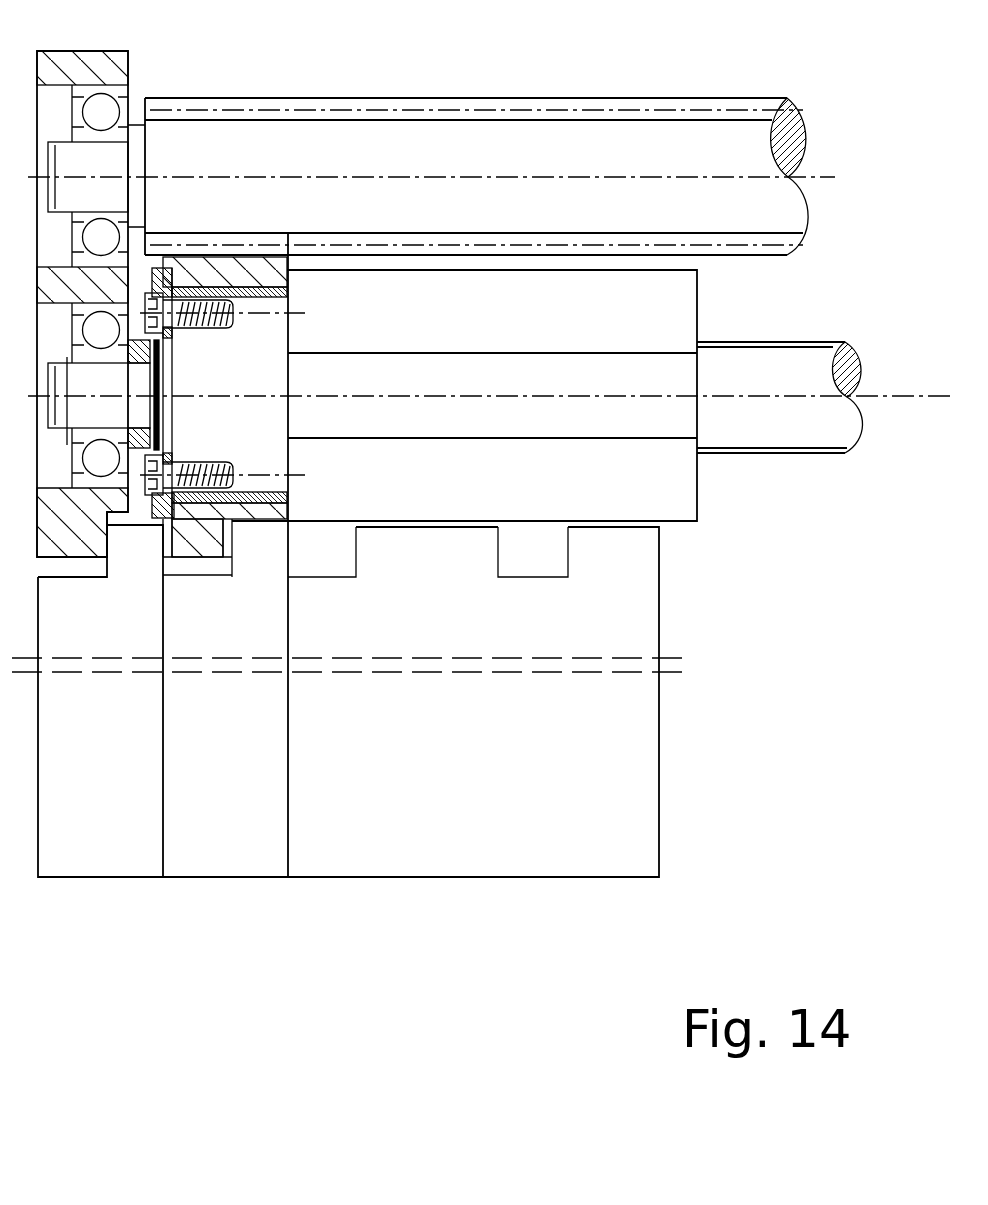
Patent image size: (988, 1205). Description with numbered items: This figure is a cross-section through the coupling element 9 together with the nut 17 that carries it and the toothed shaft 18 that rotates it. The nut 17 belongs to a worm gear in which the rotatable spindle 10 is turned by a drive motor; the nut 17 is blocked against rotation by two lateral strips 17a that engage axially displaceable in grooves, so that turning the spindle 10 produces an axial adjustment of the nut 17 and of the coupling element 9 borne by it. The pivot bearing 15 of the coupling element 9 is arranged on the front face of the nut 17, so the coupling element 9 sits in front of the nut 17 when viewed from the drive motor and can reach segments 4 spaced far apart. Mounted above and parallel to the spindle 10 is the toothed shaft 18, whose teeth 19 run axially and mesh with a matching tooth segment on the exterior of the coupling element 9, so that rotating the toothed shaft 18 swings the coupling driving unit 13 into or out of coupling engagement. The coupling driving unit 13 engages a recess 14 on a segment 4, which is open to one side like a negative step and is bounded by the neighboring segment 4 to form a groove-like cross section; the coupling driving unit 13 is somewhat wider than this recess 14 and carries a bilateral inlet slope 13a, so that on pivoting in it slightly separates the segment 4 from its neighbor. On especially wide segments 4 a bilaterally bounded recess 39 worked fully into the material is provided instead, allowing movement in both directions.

The segment 4 is at (98, 855).
The coupling element 9 is at (257, 268).
The spindle 10 is at (773, 433).
The coupling driving unit 13 is at (197, 540).
The inlet slope 13a is at (167, 540).
The recess 14 is at (225, 562).
The pivot bearing 15 is at (207, 287).
The nut 17 is at (673, 304).
The lateral strip 17a is at (592, 427).
The toothed shaft 18 is at (716, 137).
The teeth 19 is at (670, 103).
The bilaterally bounded recess 39 is at (523, 553).